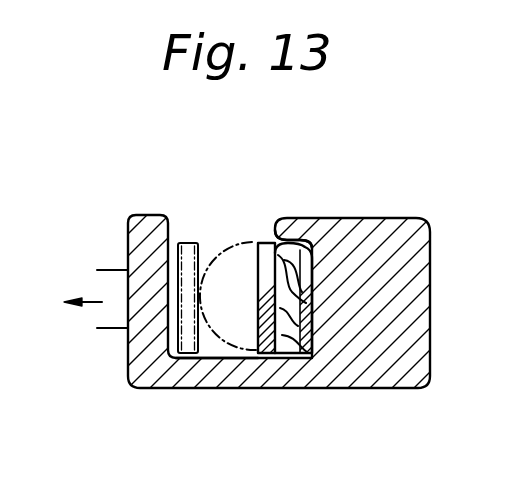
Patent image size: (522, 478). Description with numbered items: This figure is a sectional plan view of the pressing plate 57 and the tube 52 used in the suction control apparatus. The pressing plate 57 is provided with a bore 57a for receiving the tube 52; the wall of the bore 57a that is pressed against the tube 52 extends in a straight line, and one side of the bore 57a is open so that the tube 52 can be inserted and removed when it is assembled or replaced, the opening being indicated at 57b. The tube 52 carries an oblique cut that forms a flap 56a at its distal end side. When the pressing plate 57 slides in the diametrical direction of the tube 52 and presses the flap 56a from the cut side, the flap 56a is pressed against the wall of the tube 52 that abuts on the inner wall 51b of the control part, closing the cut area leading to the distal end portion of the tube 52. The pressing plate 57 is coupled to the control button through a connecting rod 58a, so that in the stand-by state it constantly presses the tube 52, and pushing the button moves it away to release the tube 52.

The pressing plate 57 is at (408, 219).
The bore 57a is at (203, 370).
The opening of bracket 57b is at (250, 223).
The flap 56a is at (337, 228).
The connecting rod 58a is at (114, 317).
The tube 52 is at (312, 338).
The inner wall 51b is at (296, 357).